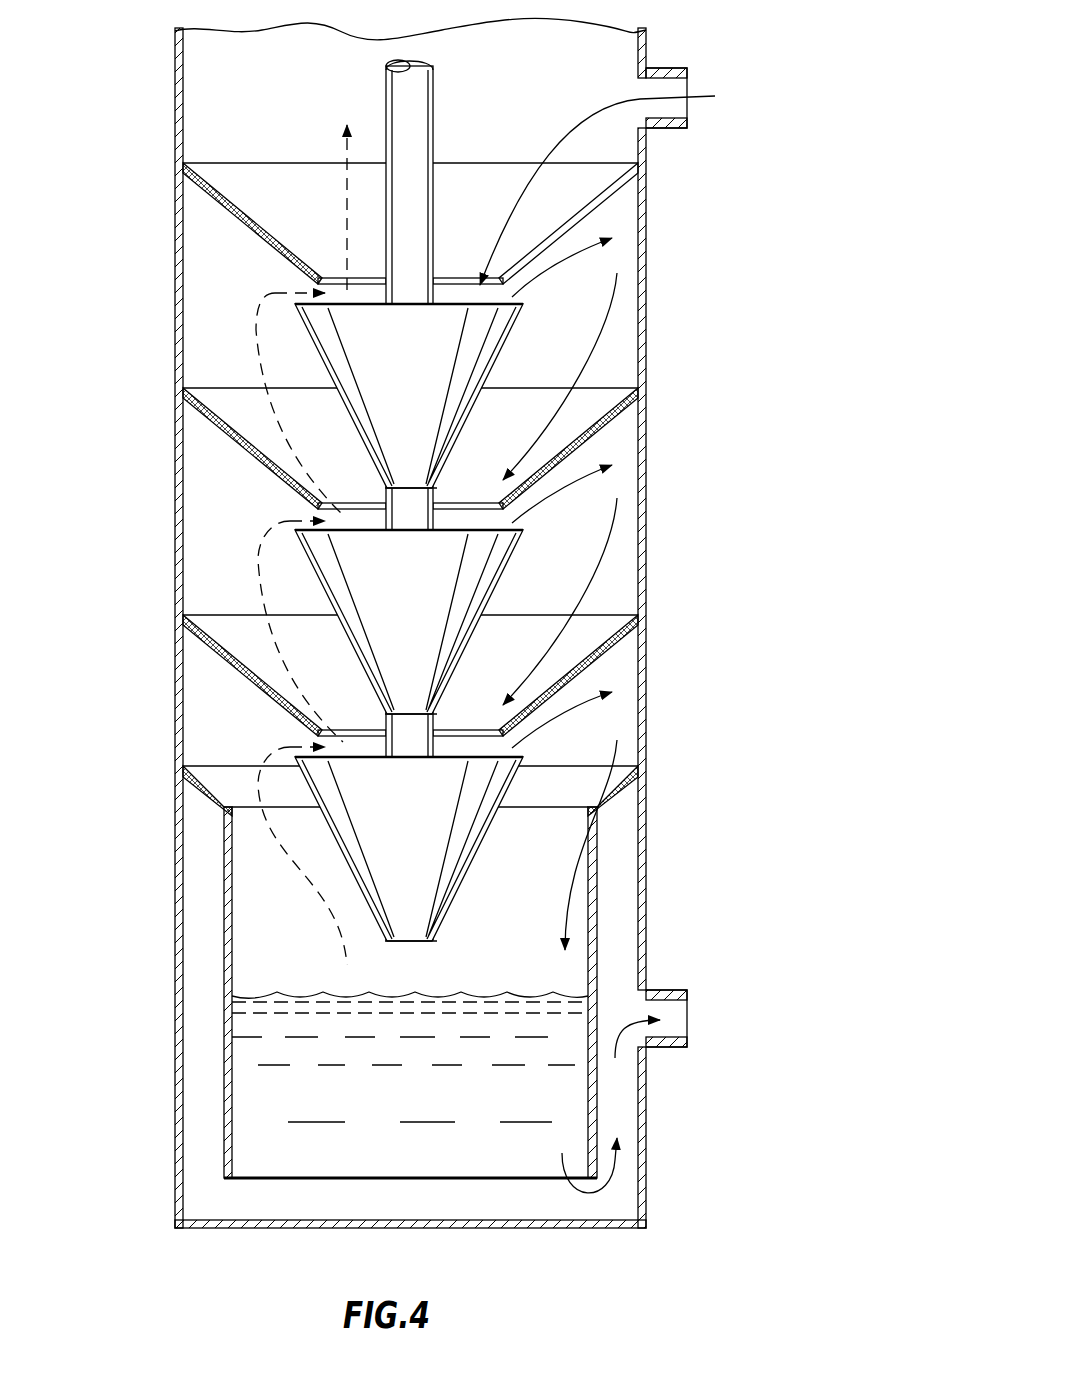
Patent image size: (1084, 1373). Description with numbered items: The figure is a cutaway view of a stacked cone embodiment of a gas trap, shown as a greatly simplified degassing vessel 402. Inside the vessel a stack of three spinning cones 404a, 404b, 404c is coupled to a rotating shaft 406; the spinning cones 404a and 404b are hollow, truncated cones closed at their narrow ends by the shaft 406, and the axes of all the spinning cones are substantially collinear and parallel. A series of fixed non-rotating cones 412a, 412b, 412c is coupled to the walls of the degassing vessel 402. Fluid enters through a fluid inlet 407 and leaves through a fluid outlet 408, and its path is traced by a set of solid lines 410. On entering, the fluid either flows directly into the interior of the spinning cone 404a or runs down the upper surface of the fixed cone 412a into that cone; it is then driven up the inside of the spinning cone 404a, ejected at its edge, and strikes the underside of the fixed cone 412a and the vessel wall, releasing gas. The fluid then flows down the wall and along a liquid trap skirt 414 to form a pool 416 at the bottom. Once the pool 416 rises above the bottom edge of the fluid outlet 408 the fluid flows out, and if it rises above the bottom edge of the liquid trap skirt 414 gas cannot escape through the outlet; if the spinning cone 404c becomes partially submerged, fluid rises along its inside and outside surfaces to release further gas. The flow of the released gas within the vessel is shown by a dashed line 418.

The degassing vessel 402 is at (175, 705).
The spinning cone 404a is at (432, 370).
The spinning cone 404b is at (436, 602).
The spinning cone 404c is at (439, 810).
The rotating shaft 406 is at (433, 85).
The fluid inlet 407 is at (675, 68).
The fluid outlet 408 is at (675, 990).
The solid lines 410 is at (592, 116).
The fixed cone 412a is at (215, 197).
The fixed cone 412b is at (212, 412).
The fixed cone 412c is at (215, 640).
The liquid trap skirt 414 is at (224, 1078).
The pool 416 is at (263, 995).
The dashed line 418 is at (345, 153).